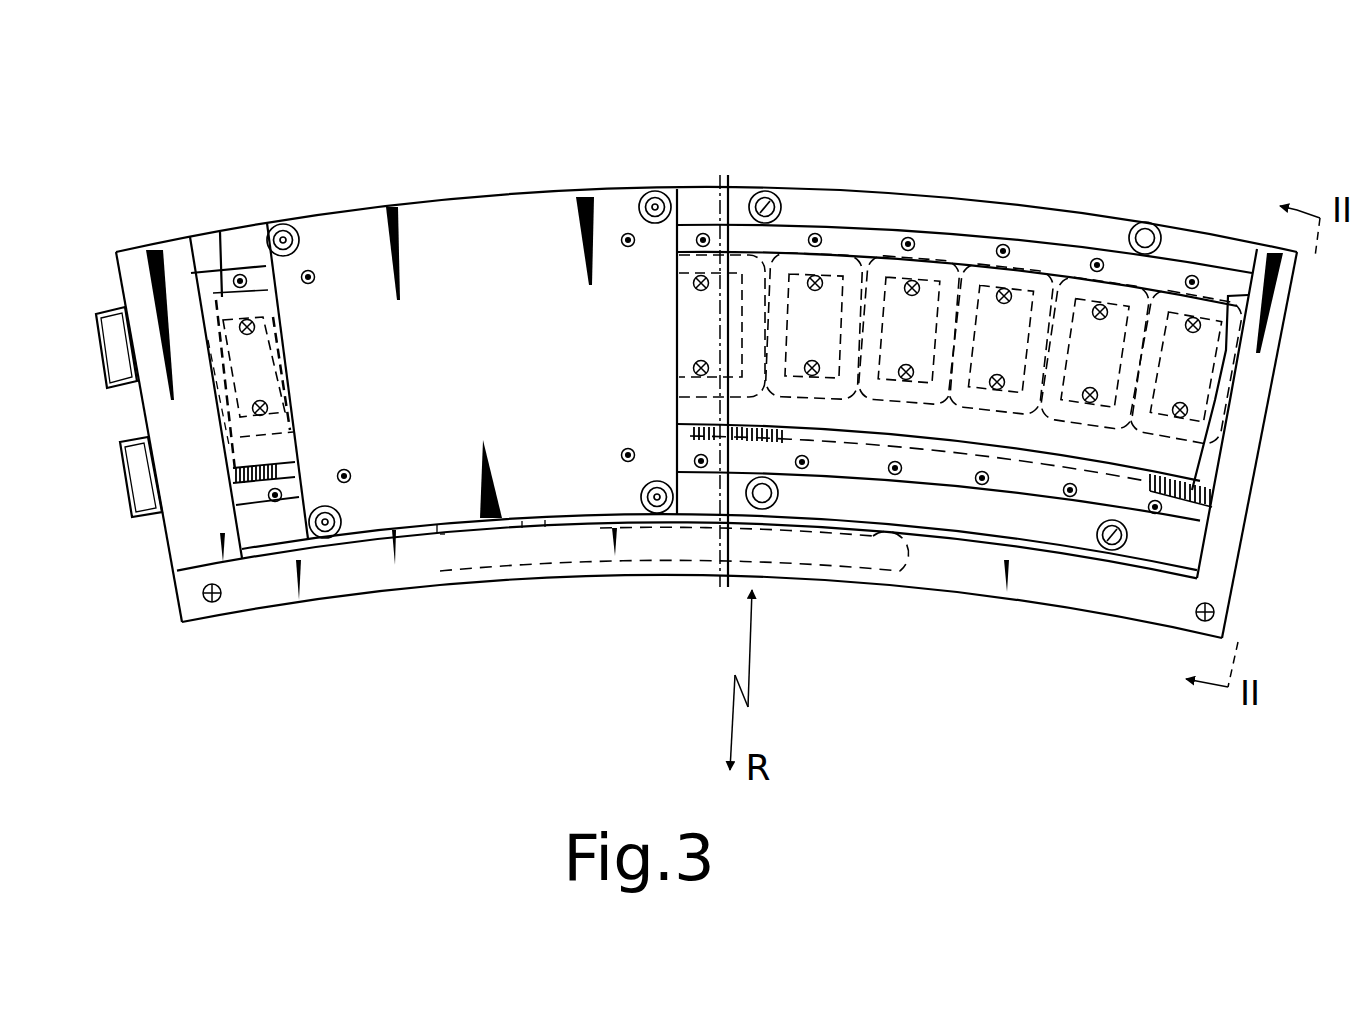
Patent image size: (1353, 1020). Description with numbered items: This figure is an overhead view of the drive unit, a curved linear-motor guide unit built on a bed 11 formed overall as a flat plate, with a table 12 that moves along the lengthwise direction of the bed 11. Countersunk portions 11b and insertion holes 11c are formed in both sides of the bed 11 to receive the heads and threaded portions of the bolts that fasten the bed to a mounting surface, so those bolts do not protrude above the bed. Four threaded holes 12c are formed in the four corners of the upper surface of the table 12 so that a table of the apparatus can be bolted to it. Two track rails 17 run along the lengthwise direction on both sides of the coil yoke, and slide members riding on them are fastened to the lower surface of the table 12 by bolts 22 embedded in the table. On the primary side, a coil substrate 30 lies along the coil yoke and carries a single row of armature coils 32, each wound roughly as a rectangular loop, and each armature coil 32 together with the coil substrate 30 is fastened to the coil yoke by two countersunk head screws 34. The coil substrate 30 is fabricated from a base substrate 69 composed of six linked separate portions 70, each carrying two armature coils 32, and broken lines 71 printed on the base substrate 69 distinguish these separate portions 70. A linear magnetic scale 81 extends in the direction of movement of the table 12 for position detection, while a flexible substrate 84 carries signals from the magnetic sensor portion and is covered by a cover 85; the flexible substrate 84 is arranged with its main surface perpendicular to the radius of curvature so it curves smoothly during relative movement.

The bed 11 is at (271, 533).
The countersunk portions 11b is at (762, 196).
The insertion holes 11c is at (773, 196).
The table 12 is at (495, 225).
The threaded holes 12c is at (313, 273).
The track rails 17 is at (859, 236).
The bolts 22 is at (284, 224).
The coil substrate 30 is at (1018, 462).
The armature coils 32 is at (226, 300).
The countersunk head screws 34 is at (255, 327).
The base substrate 69 is at (968, 456).
The separate portions 70 is at (1113, 447).
The broken lines 71 is at (858, 428).
The linear magnetic scale 81 is at (922, 448).
The flexible substrate 84 is at (559, 572).
The cover 85 is at (497, 556).